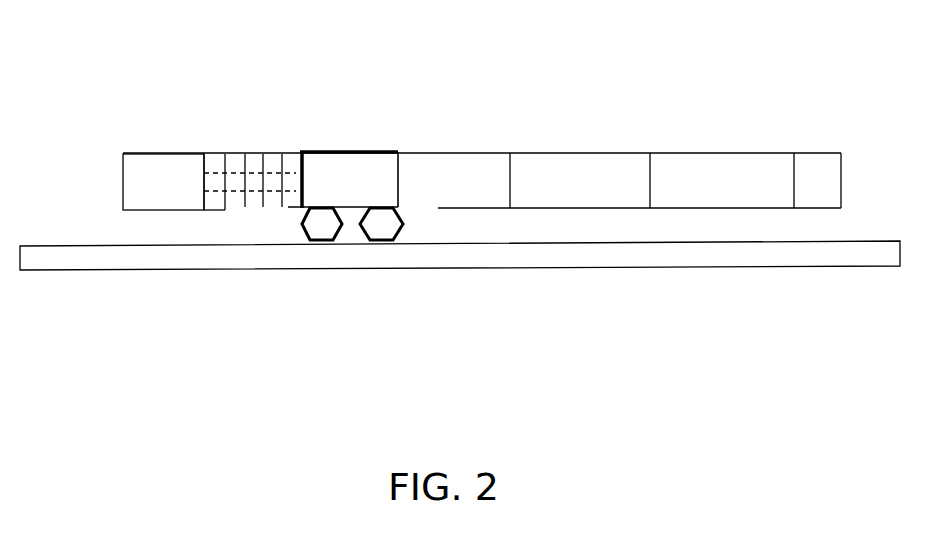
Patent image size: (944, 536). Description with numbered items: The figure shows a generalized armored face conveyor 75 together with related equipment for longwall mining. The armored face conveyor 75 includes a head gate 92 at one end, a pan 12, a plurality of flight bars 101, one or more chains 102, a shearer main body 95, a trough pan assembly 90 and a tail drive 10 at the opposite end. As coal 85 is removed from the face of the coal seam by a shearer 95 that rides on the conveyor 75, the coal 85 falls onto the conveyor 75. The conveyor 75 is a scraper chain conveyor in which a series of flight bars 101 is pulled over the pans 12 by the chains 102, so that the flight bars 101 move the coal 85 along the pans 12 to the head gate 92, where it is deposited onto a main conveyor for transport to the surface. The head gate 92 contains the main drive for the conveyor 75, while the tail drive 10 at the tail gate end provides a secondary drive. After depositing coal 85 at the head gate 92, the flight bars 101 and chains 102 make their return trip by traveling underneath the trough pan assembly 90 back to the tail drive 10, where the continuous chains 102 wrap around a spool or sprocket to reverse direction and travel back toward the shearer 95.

The armored face conveyor 75 is at (668, 72).
The head gate 92 is at (137, 145).
The pan 12 is at (212, 150).
The flight bars 101 is at (245, 153).
The chains 102 is at (293, 190).
The shearer main body 95 is at (342, 148).
The trough pan assembly 90 is at (558, 143).
The tail drive 10 is at (822, 142).
The coal 85 is at (645, 274).